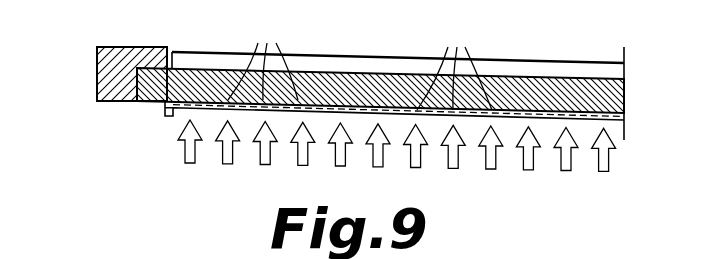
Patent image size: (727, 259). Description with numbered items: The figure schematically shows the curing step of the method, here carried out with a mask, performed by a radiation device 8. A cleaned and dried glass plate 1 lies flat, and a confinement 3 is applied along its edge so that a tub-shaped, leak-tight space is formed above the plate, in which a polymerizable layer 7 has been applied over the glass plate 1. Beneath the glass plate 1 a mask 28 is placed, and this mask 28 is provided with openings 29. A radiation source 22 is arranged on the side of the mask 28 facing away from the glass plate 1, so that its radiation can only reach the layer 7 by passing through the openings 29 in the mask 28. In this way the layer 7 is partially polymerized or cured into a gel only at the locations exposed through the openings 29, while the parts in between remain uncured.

The glass plate 1 is at (624, 91).
The confinement 3 is at (97, 72).
The polymerizable layer 7 is at (527, 70).
The radiation device 8 is at (128, 183).
The radiation source 22 is at (228, 153).
The mask 28 is at (621, 122).
The openings 29 is at (360, 59).